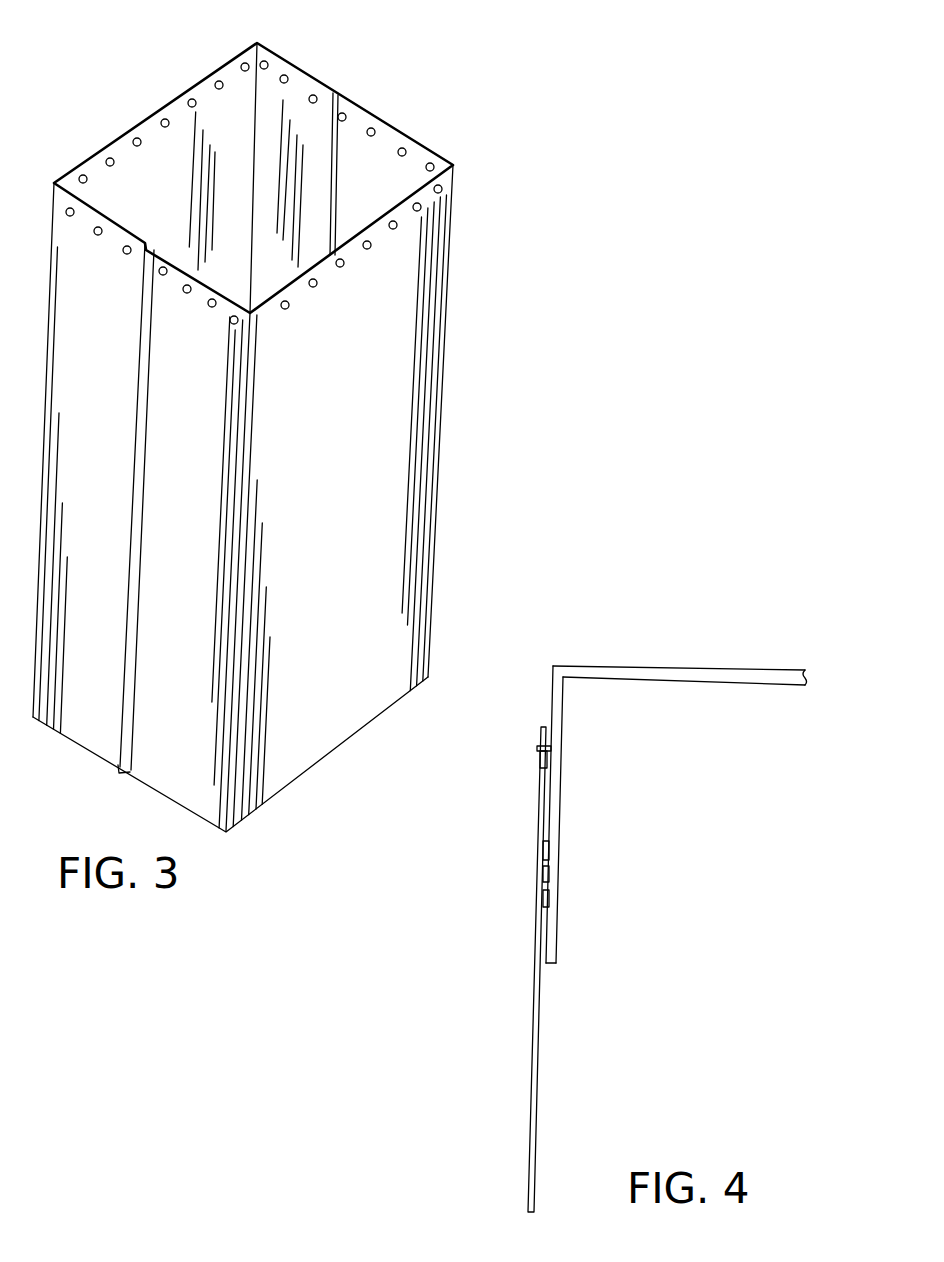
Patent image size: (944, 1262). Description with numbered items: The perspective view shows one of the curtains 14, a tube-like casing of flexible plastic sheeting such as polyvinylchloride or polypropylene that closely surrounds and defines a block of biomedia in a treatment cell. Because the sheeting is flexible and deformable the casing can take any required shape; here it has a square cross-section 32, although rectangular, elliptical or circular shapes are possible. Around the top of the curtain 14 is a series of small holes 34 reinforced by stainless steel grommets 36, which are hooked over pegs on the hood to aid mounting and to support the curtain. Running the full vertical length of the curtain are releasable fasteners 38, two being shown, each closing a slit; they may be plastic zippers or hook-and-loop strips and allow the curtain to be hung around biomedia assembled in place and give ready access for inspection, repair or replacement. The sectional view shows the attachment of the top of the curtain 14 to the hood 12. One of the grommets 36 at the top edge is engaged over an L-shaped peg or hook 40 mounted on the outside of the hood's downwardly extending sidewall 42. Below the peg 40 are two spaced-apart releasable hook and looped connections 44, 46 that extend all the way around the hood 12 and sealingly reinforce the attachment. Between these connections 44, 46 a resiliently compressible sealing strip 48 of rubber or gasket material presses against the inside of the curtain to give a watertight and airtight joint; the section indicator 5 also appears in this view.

In FIG. 4, the section view indicator 5 is at (527, 853).
In FIG. 4, the hood 12 is at (675, 665).
In FIG. 3, the curtain 14 is at (384, 432).
In FIG. 4, the curtain 14 is at (535, 1098).
In FIG. 3, the square cross-section 32 is at (275, 425).
In FIG. 3, the small holes 34 is at (288, 309).
In FIG. 3, the grommets 36 is at (316, 289).
In FIG. 4, the grommets 36 is at (538, 762).
In FIG. 3, the releasable fastener 38 is at (332, 188).
In FIG. 4, the L-shaped peg or hook 40 is at (538, 746).
In FIG. 4, the downwardly extending sidewall 42 is at (558, 732).
In FIG. 4, the releasable hook and looped connection 44 is at (549, 902).
In FIG. 4, the releasable hook and looped connection 46 is at (549, 860).
In FIG. 4, the sealing strip 48 is at (549, 880).